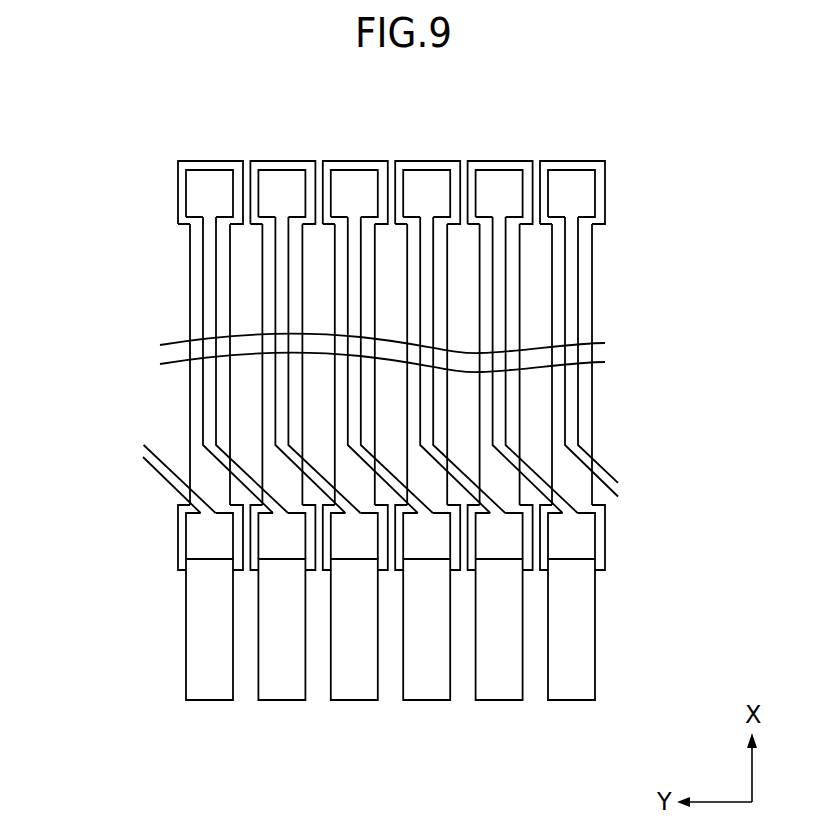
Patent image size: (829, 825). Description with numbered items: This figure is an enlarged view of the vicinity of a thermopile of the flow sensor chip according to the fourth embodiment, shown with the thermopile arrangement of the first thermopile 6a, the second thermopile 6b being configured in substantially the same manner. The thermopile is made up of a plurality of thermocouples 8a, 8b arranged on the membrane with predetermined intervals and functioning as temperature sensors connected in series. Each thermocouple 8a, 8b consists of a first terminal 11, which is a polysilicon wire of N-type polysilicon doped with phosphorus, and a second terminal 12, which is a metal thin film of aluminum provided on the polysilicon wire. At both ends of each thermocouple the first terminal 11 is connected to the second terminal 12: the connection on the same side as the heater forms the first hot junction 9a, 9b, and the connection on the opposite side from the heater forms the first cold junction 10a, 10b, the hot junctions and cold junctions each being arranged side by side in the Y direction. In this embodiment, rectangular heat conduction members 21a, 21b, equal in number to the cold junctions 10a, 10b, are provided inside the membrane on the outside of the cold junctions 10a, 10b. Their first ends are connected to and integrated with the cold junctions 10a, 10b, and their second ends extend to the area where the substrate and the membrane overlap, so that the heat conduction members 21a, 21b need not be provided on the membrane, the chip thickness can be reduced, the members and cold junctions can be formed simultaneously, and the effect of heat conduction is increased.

The first thermopile 6a is at (591, 142).
The second thermopile 6b is at (348, 427).
The thermocouple 8a is at (213, 160).
The thermocouple 8b is at (391, 160).
The first hot junction 9a is at (167, 162).
The hot junction 9b is at (331, 195).
The first cold junction 10a is at (168, 505).
The cold junction 10b is at (326, 537).
The first terminal 11 is at (197, 306).
The second terminal 12 is at (212, 263).
The heat conduction member 21a is at (222, 702).
The heat conduction member 21b is at (397, 670).